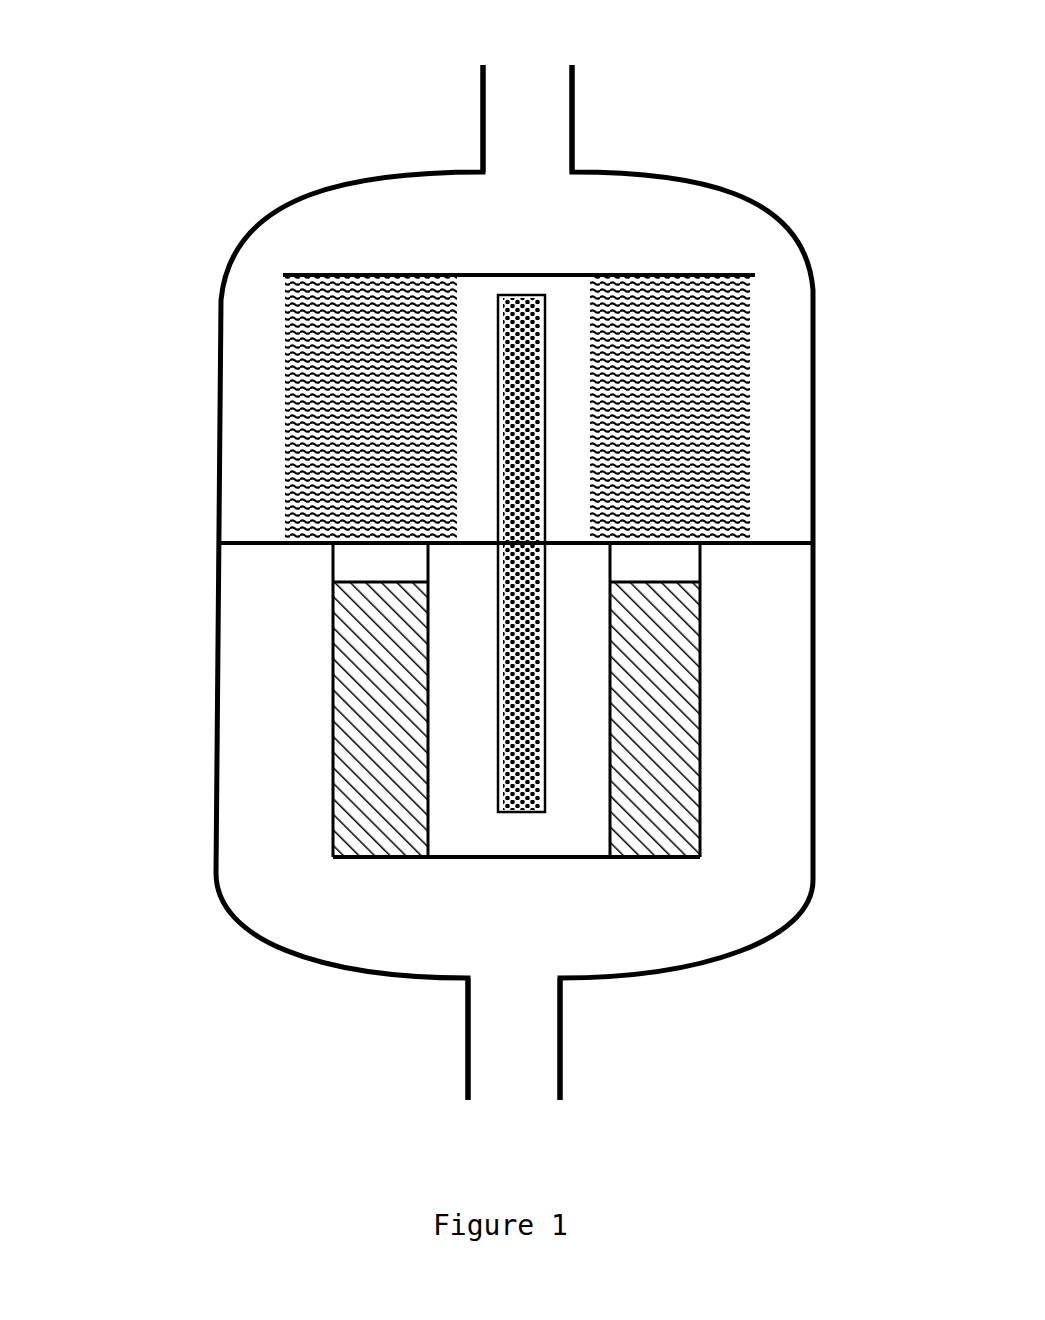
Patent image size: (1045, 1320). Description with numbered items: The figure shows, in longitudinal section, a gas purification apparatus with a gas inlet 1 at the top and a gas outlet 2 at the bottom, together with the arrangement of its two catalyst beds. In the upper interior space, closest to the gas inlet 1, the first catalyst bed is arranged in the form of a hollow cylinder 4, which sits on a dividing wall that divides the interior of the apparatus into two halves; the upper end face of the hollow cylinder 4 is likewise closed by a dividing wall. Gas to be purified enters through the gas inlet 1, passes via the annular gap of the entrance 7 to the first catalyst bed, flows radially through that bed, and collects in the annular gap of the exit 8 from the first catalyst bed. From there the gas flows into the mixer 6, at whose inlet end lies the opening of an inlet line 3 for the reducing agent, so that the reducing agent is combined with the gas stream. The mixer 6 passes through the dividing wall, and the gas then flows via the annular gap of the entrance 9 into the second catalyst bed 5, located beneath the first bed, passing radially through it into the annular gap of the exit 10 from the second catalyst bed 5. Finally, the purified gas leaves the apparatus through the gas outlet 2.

The gas inlet 1 is at (527, 86).
The gas outlet 2 is at (514, 1077).
The inlet line 3 is at (522, 294).
The hollow cylinder 4 is at (519, 406).
The second catalyst bed 5 is at (516, 700).
The mixer 6 is at (552, 295).
The annular gap of the entrance 7 is at (777, 345).
The annular gap of the exit 8 is at (568, 470).
The annular gap of the entrance 9 is at (568, 620).
The annular gap of the exit 10 is at (731, 730).